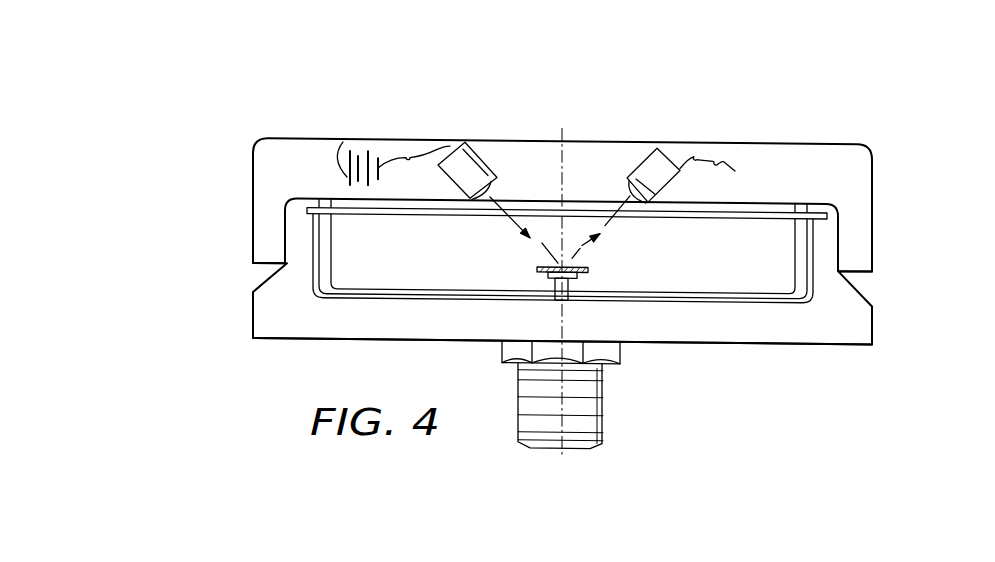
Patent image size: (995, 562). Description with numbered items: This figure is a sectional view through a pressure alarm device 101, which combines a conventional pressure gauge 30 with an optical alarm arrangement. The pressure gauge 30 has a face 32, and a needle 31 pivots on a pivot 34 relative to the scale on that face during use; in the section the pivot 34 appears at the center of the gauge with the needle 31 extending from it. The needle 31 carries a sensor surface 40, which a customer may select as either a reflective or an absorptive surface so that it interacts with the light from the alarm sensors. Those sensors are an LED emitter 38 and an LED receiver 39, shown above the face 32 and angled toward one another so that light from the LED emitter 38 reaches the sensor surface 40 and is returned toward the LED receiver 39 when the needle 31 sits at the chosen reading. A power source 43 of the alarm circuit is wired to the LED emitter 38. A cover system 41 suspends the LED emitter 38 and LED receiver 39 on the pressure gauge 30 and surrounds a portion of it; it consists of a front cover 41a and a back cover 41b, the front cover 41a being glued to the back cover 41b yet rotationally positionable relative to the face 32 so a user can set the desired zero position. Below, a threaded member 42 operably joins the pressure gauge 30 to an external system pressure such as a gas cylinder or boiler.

The pressure alarm device 101 is at (469, 238).
The cover system 41 is at (469, 230).
The front cover 41a is at (252, 177).
The back cover 41b is at (252, 317).
The pressure gauge 30 is at (768, 350).
The face 32 is at (683, 298).
The pivot 34 is at (553, 290).
The sensor surface 40 is at (546, 261).
The needle 31 is at (580, 258).
The LED emitter 38 is at (482, 140).
The LED receiver 39 is at (636, 163).
The power source 43 is at (347, 140).
The threaded member 42 is at (602, 412).